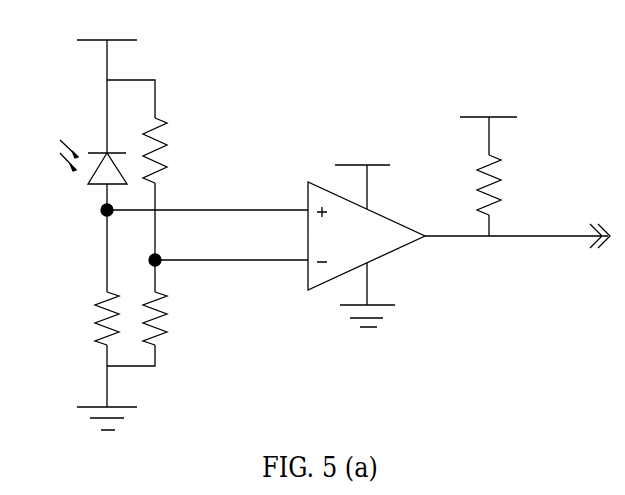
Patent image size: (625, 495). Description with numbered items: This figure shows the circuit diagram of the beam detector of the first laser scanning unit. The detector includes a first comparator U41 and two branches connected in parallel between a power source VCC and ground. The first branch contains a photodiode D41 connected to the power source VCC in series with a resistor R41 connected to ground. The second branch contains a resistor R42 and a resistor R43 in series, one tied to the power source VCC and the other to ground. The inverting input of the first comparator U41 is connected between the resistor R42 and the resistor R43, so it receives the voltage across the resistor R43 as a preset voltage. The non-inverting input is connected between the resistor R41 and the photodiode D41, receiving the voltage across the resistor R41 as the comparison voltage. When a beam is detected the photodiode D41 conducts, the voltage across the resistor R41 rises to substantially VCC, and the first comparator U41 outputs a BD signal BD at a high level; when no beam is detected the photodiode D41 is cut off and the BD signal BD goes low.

The photodiode D41 is at (82, 153).
The resistor R41 is at (77, 349).
The resistor R42 is at (183, 189).
The resistor R43 is at (166, 313).
The first comparator U41 is at (372, 254).
The power source VCC is at (297, 108).
The BD signal BD is at (517, 253).